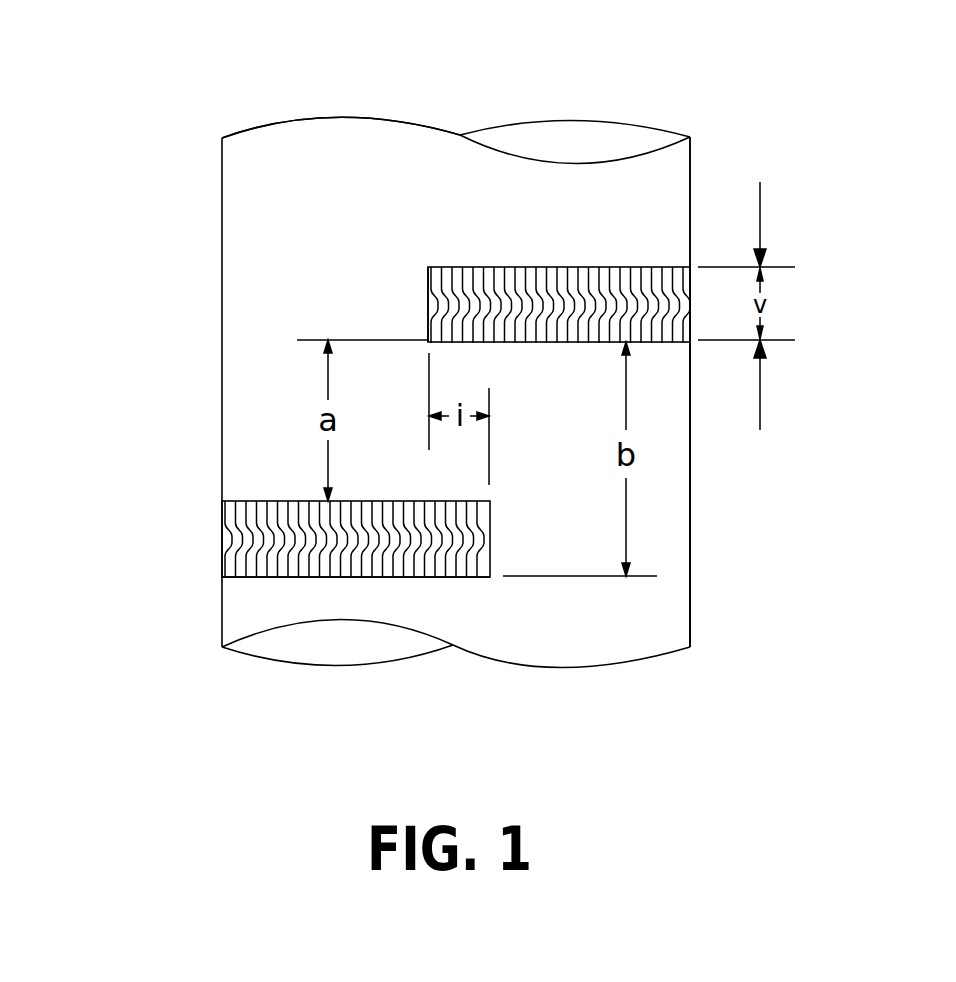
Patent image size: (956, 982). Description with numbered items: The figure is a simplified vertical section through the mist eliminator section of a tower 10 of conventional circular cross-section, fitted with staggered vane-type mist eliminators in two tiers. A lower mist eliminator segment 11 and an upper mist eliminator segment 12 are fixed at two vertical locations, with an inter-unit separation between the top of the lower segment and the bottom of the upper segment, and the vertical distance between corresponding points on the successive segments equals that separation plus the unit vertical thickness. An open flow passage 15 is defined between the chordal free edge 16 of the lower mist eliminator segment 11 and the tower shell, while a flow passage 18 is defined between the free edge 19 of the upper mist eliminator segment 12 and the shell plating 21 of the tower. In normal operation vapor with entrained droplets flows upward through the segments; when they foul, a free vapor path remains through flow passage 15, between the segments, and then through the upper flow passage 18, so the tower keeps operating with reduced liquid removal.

The tower 10 is at (200, 264).
The lower mist eliminator segment 11 is at (266, 466).
The upper mist eliminator segment 12 is at (641, 232).
The open flow passage 15 is at (672, 522).
The chordal free edge 16 is at (493, 578).
The flow passage 18 is at (333, 232).
The free edge 19 is at (433, 257).
The shell plating 21 is at (694, 472).